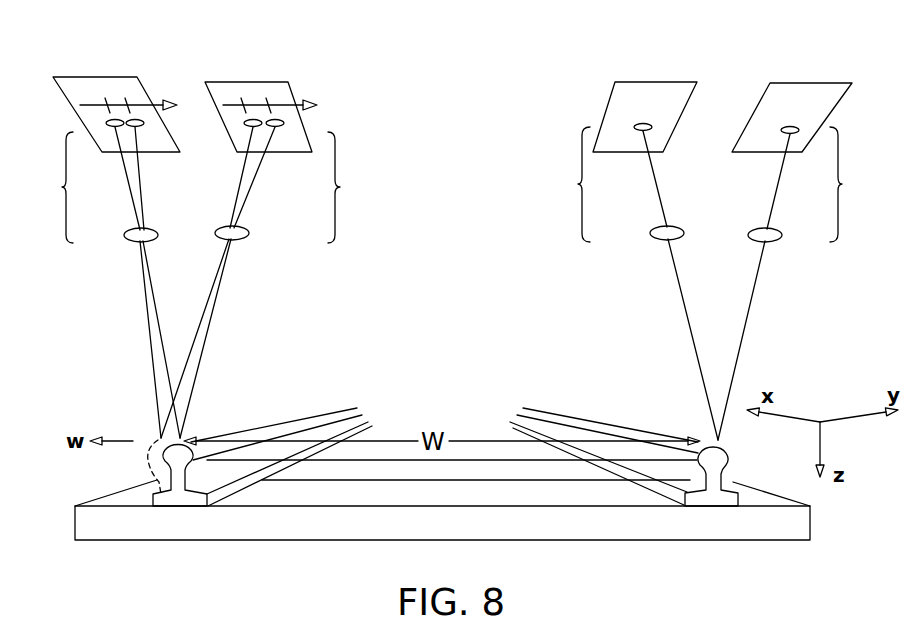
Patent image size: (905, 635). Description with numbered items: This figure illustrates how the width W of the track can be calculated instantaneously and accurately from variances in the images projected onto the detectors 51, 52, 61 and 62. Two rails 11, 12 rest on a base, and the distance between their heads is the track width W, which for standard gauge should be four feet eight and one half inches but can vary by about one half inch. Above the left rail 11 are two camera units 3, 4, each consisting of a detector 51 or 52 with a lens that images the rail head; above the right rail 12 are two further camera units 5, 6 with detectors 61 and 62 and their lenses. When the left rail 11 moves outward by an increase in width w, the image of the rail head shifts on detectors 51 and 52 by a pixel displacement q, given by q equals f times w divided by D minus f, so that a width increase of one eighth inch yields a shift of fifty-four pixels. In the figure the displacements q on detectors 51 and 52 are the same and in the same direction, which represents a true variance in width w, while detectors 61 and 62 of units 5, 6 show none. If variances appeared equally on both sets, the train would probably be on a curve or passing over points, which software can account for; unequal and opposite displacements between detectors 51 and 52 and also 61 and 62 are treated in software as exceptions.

The first camera 3 is at (114, 233).
The second camera 4 is at (262, 234).
The third camera 5 is at (634, 236).
The fourth camera 6 is at (792, 237).
The first rail 11 is at (260, 427).
The second rail 12 is at (587, 418).
The detector 51 is at (88, 78).
The detector 52 is at (253, 82).
The detector 61 is at (662, 82).
The detector 62 is at (820, 83).